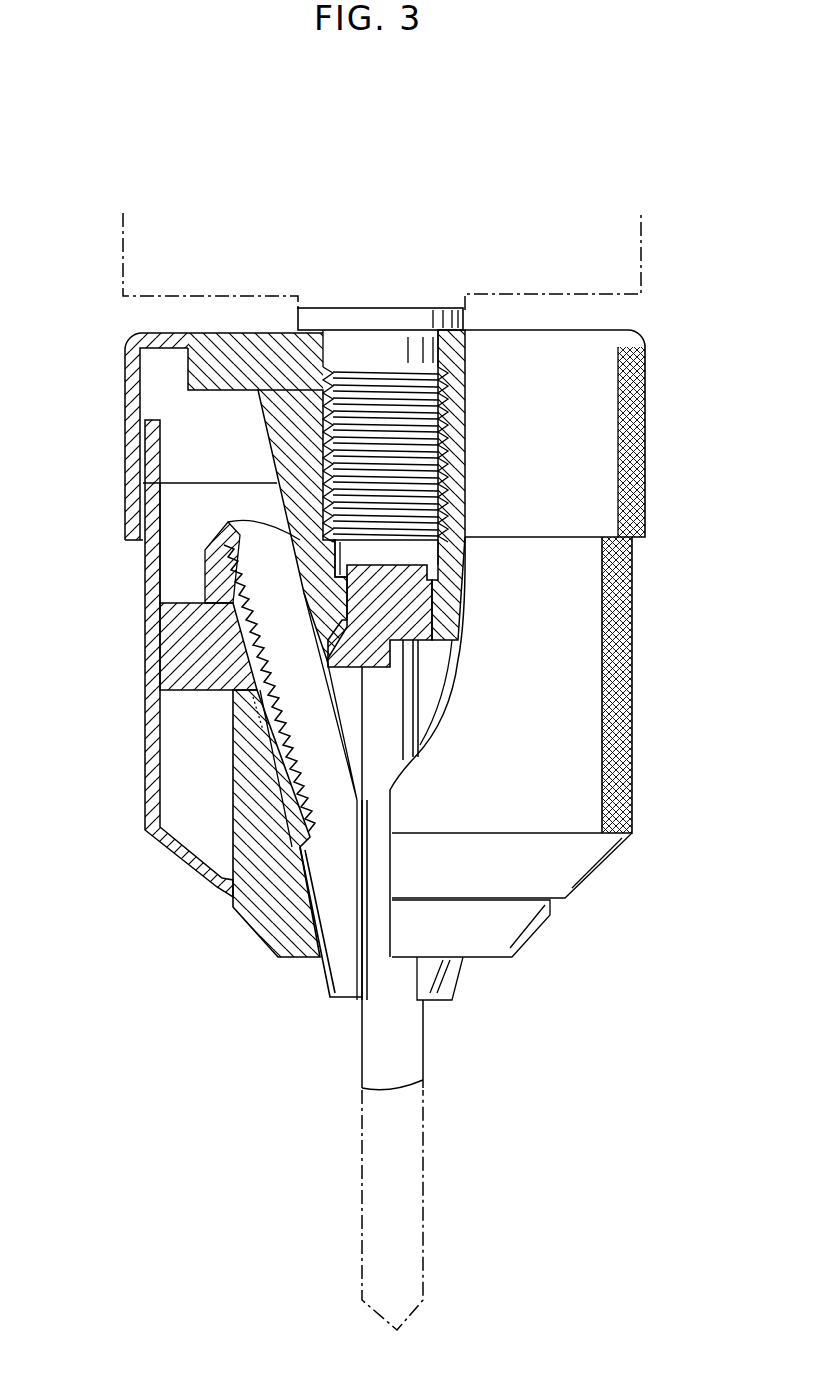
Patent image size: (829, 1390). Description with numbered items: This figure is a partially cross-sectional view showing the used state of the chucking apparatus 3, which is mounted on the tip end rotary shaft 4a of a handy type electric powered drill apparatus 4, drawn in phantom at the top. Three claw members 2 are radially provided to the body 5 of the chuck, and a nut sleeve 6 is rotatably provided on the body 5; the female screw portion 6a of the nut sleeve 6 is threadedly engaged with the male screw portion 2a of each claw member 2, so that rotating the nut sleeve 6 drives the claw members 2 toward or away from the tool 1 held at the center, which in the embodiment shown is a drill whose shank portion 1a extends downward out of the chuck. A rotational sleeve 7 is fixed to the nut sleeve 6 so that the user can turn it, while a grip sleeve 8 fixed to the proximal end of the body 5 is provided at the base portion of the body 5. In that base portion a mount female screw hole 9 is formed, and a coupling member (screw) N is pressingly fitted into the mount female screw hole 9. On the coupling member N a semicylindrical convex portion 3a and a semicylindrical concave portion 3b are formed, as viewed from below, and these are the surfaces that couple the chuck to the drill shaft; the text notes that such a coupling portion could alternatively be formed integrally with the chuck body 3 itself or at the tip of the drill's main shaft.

The tool 1 is at (413, 1047).
The pin shank 1a is at (357, 913).
The claw member 2 is at (340, 970).
The male screw portion 2a is at (300, 786).
The chucking apparatus 3 is at (664, 634).
The semicylindrical convex portion 3a is at (332, 672).
The semicylindrical concave portion 3b is at (432, 645).
The handy type electric powered drill apparatus 4 is at (614, 272).
The tip end rotary shaft 4a is at (443, 373).
The body 5 is at (253, 913).
The nut sleeve 6 is at (160, 688).
The female screw portion 6a is at (232, 604).
The rotational sleeve 7 is at (145, 643).
The grip sleeve 8 is at (137, 430).
The mount female screw hole 9 is at (440, 525).
The coupling member (screw) N is at (410, 606).